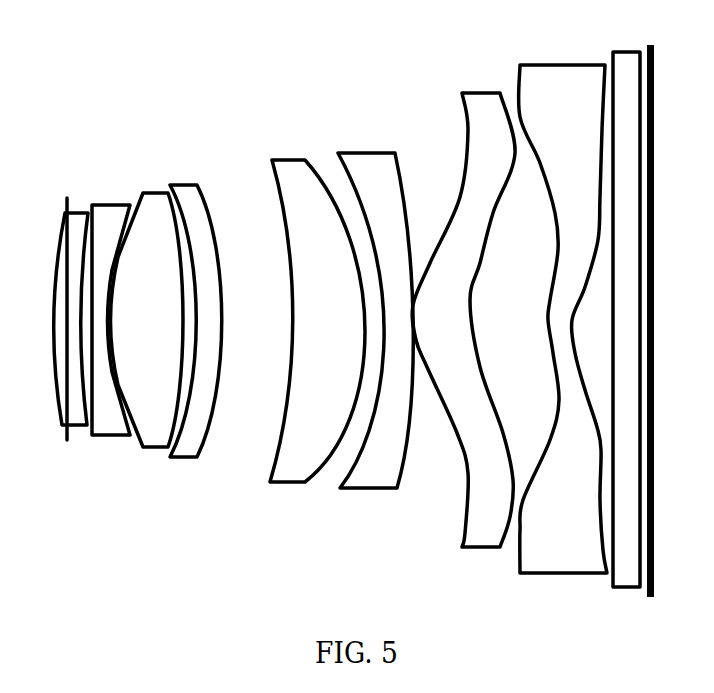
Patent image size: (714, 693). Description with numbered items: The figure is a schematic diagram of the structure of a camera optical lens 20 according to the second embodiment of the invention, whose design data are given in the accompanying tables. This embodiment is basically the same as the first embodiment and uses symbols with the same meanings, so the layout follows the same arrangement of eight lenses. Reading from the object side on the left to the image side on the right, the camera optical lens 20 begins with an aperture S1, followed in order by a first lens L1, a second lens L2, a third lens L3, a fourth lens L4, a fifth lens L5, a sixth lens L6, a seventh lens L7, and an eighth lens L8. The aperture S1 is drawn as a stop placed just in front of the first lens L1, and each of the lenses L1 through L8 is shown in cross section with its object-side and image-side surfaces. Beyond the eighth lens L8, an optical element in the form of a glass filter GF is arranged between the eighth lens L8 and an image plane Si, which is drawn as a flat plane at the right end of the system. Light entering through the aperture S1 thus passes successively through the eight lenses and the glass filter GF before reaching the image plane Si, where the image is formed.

The camera optical lens 20 is at (365, 45).
The aperture S1 is at (50, 317).
The first lens L1 is at (75, 305).
The second lens L2 is at (111, 308).
The third lens L3 is at (147, 307).
The fourth lens L4 is at (196, 308).
The fifth lens L5 is at (317, 307).
The sixth lens L6 is at (375, 308).
The seventh lens L7 is at (463, 307).
The eighth lens L8 is at (563, 306).
The glass filter GF is at (627, 306).
The image plane Si is at (650, 307).